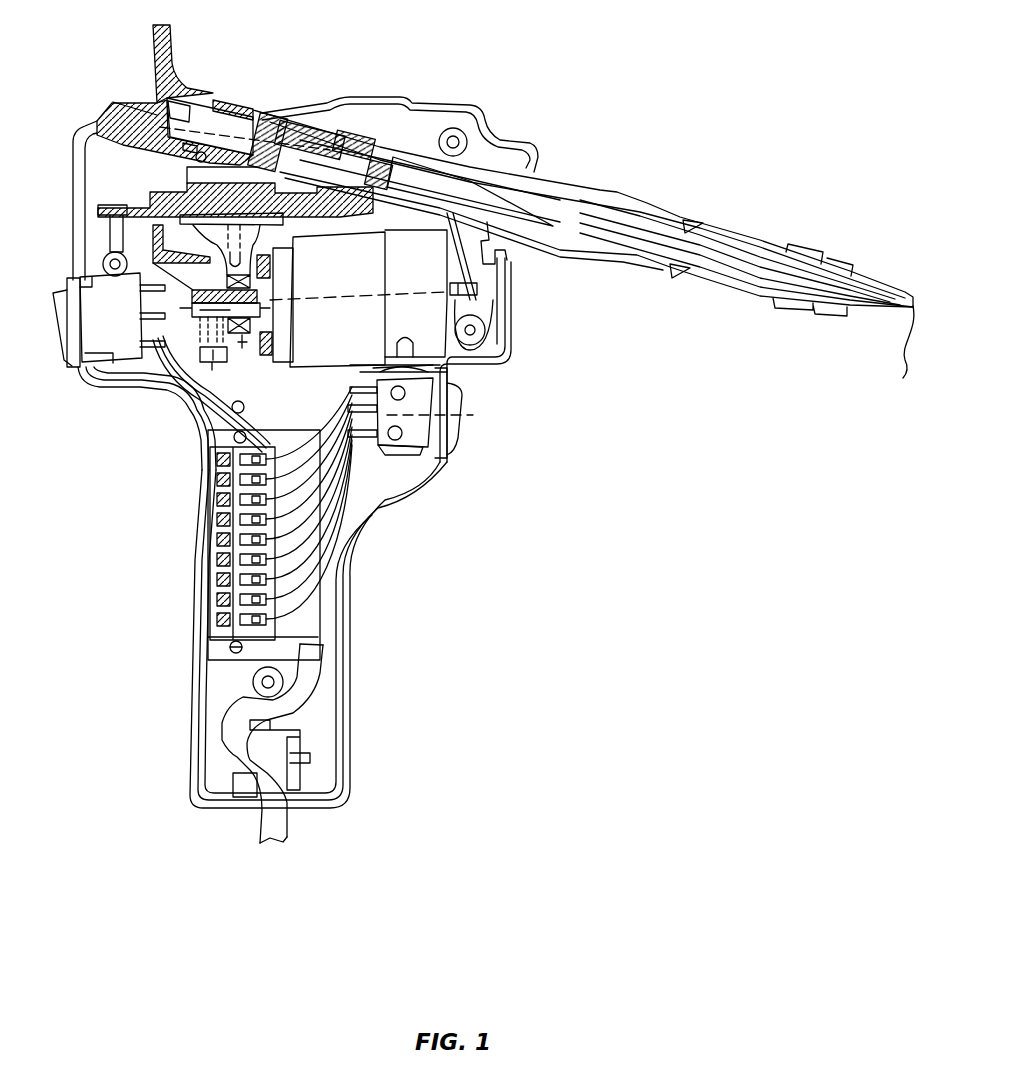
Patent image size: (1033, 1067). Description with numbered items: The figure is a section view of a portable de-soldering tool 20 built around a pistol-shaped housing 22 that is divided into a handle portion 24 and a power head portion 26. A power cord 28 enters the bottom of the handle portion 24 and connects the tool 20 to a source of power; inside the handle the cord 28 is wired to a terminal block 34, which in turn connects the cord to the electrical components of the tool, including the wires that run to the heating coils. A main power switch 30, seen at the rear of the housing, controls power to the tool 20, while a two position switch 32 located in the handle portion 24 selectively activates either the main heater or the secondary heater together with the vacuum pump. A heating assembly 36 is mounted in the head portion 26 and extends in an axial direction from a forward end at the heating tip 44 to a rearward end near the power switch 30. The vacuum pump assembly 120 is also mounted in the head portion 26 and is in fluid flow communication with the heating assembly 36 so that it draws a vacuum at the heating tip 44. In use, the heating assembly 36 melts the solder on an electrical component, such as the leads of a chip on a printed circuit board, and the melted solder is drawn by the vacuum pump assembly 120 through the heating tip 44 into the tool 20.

The portable de-soldering tool 20 is at (573, 88).
The pistol-shaped housing 22 is at (514, 340).
The handle portion 24 is at (350, 580).
The power head portion 26 is at (388, 92).
The power cord 28 is at (316, 702).
The main power switch 30 is at (70, 337).
The two position switch 32 is at (465, 433).
The terminal block 34 is at (236, 512).
The heating assembly 36 is at (690, 182).
The heating tip 44 is at (904, 353).
The vacuum pump assembly 120 is at (298, 382).